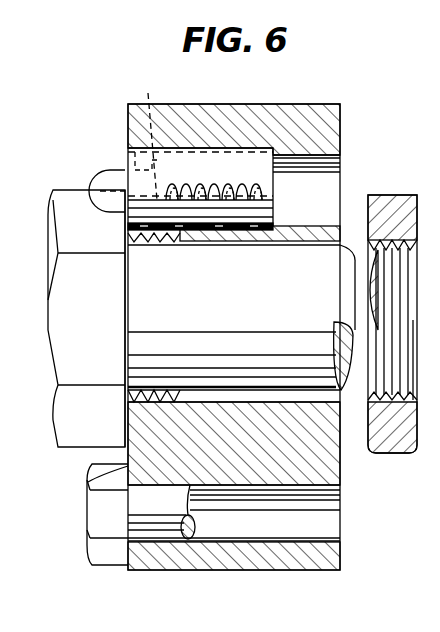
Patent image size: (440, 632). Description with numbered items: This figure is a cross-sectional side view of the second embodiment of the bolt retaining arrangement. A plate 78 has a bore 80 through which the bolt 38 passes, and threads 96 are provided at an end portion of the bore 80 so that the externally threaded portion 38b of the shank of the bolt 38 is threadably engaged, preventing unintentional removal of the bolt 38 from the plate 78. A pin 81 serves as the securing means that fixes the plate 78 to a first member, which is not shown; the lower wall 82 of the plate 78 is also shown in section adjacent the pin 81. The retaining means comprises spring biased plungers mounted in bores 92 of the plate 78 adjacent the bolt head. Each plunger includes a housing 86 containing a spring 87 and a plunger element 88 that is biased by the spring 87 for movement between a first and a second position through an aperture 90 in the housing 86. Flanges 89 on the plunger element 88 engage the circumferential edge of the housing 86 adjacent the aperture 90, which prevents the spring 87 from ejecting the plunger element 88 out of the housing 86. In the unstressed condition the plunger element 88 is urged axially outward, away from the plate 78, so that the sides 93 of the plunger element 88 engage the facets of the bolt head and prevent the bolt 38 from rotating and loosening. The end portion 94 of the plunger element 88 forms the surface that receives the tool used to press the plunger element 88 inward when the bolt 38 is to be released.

The bolt 38 is at (55, 461).
The externally threaded portion 38b is at (355, 250).
The plate 78 is at (320, 467).
The bore 80 is at (283, 406).
The pin 81 is at (108, 553).
The housing wall 82 is at (247, 530).
The housing 86 is at (200, 160).
The spring 87 is at (235, 175).
The plunger element 88 is at (70, 156).
The flanges 89 is at (145, 135).
The aperture 90 is at (128, 160).
The bores 92 is at (322, 200).
The sides 93 is at (110, 170).
The end portion 94 is at (90, 185).
The threads 96 is at (88, 482).